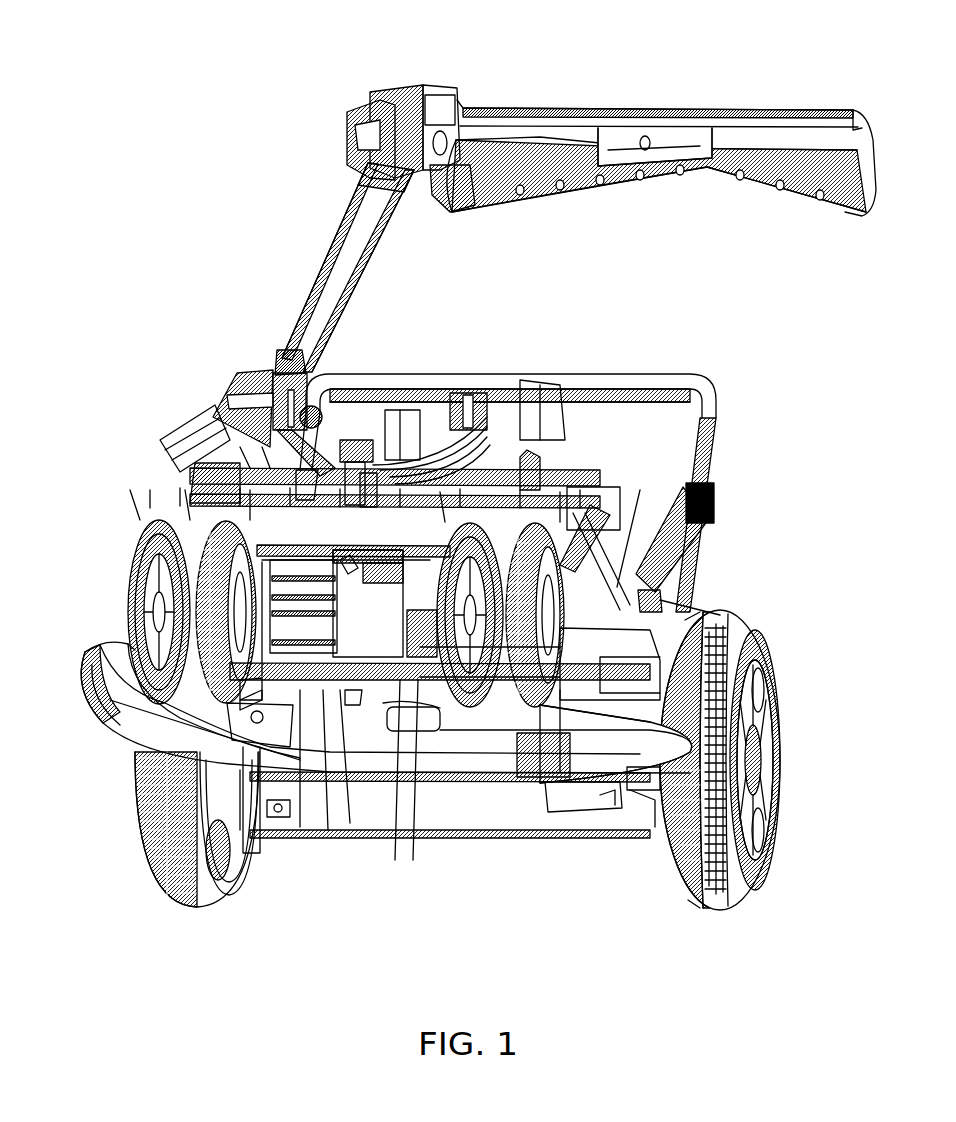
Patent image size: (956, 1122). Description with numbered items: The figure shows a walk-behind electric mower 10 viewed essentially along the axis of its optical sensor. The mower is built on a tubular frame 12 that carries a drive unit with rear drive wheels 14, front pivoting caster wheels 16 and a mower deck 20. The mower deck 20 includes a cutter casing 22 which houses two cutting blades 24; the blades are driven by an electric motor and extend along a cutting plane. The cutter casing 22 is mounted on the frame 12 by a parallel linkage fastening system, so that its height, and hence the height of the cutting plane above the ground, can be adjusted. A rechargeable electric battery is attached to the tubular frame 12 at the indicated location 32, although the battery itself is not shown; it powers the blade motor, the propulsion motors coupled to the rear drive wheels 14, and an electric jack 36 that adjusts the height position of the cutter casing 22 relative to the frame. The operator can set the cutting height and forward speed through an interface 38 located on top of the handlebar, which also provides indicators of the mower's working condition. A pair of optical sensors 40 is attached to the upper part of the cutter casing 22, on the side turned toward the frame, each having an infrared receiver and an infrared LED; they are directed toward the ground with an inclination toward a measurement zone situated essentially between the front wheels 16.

The walk-behind mower 10 is at (233, 245).
The tubular frame 12 is at (242, 470).
The rear drive wheels 14 is at (137, 847).
The front pivoting caster wheels 16 is at (137, 535).
The mower deck 20 is at (88, 641).
The cutter casing 22 is at (692, 574).
The cutting blades 24 is at (405, 722).
The location of the battery 32 is at (380, 410).
The electric jack 36 is at (377, 452).
The interface 38 is at (648, 100).
The optical sensors 40 is at (350, 562).